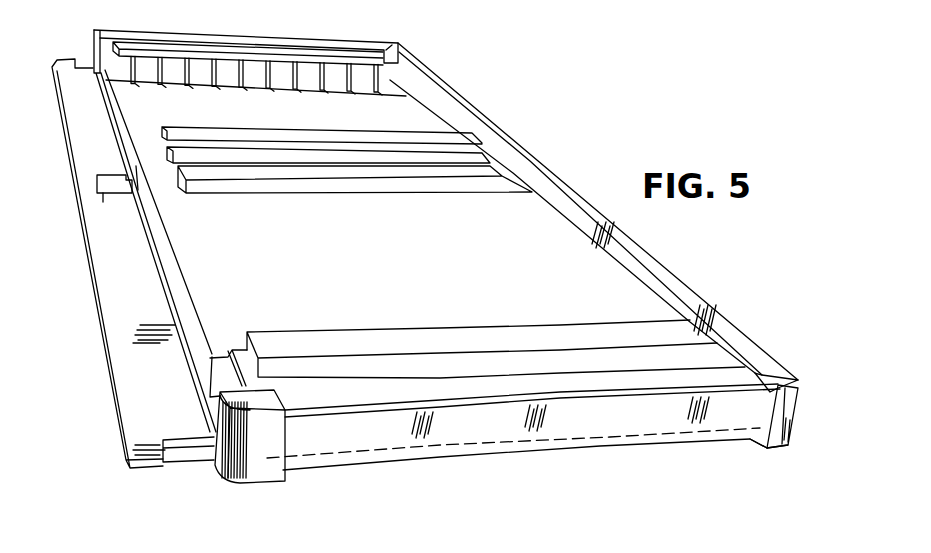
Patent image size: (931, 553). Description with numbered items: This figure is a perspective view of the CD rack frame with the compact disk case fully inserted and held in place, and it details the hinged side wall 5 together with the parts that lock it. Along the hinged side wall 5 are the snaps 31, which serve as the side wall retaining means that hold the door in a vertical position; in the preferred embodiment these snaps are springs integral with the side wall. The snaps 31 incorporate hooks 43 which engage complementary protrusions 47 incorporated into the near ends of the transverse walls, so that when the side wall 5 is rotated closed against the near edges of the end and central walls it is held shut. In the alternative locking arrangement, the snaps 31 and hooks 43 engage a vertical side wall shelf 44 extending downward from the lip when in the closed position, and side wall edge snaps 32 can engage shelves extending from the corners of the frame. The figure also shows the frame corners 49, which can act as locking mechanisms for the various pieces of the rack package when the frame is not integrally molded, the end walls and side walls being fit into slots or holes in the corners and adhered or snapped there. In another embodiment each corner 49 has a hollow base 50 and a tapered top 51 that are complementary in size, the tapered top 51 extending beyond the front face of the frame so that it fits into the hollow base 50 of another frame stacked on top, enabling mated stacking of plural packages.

The hinged side wall 5 is at (107, 287).
The snaps 31 is at (120, 198).
The side wall edge snaps 32 is at (192, 437).
The hooks 43 is at (97, 185).
The vertical side wall shelf 44 is at (133, 177).
The protrusions 47 is at (165, 131).
The frame corners 49 is at (788, 432).
The hollow base 50 is at (782, 375).
The tapered top 51 is at (765, 452).